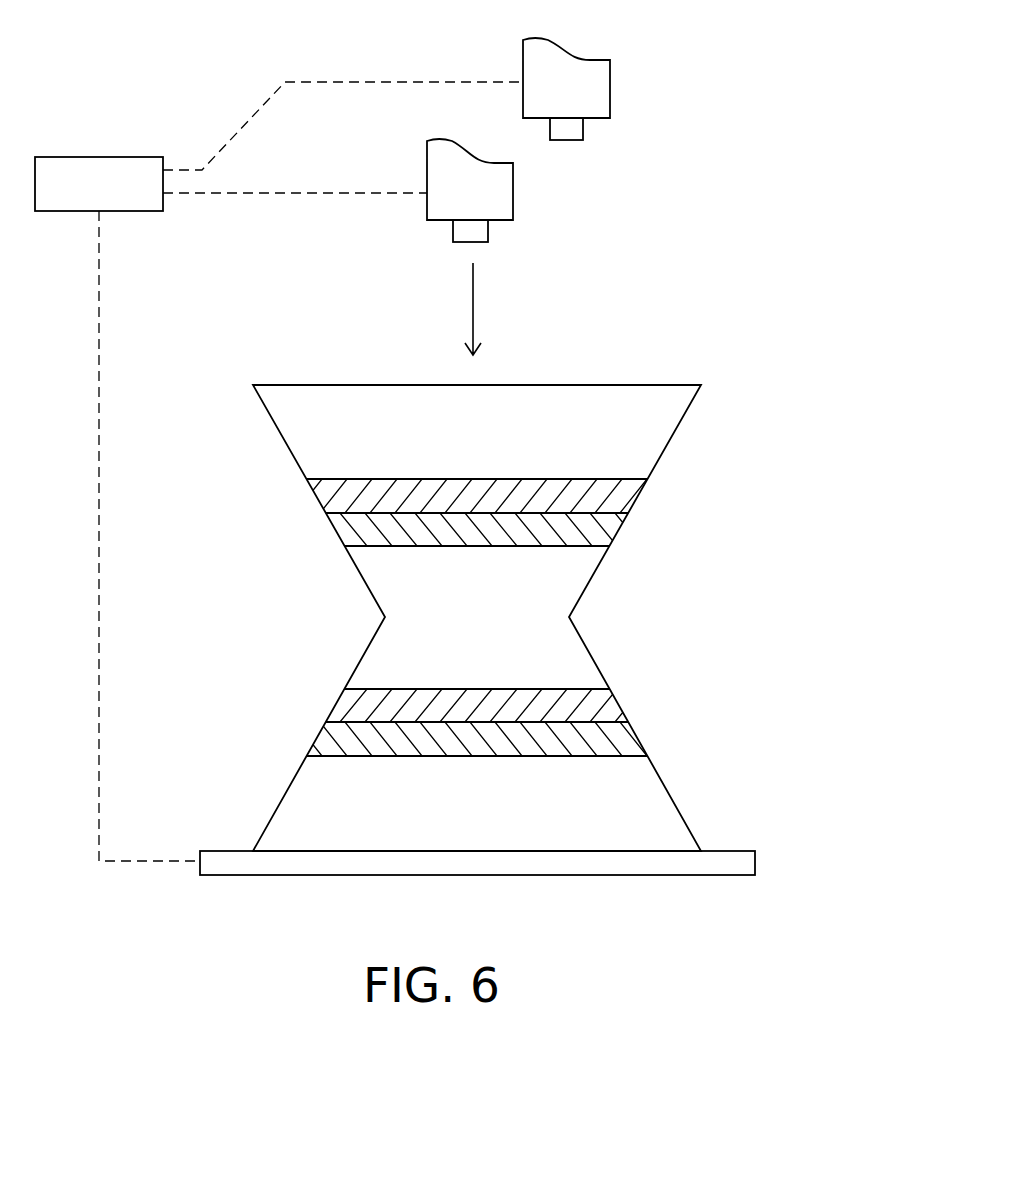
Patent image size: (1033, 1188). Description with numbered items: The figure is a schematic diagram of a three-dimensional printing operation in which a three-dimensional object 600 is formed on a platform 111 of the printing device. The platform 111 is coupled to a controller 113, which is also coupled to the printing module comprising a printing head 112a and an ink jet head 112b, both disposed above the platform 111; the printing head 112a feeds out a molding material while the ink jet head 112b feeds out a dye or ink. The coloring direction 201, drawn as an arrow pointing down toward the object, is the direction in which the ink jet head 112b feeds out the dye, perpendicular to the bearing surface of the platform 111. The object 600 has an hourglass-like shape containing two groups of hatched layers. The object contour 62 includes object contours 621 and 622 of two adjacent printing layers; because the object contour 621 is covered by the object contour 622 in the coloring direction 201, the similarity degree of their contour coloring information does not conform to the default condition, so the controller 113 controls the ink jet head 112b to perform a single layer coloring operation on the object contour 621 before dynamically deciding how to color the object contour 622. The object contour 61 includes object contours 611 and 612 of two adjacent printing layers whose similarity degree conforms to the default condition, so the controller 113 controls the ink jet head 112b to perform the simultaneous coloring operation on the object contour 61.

The controller 113 is at (111, 157).
The printing head 112a is at (610, 88).
The ink jet head 112b is at (513, 191).
The coloring direction 201 is at (473, 308).
The 3D object 600 is at (625, 385).
The object contour 62 is at (523, 515).
The object contour 622 is at (628, 492).
The object contour 621 is at (609, 527).
The object contour 61 is at (524, 723).
The object contour 612 is at (610, 710).
The object contour 611 is at (632, 742).
The platform 111 is at (755, 862).